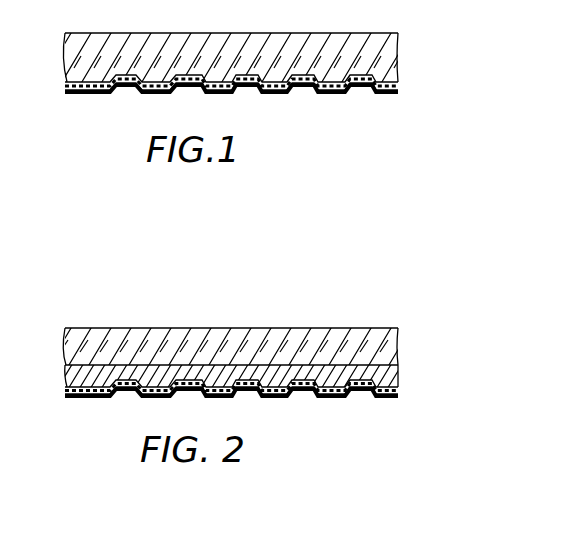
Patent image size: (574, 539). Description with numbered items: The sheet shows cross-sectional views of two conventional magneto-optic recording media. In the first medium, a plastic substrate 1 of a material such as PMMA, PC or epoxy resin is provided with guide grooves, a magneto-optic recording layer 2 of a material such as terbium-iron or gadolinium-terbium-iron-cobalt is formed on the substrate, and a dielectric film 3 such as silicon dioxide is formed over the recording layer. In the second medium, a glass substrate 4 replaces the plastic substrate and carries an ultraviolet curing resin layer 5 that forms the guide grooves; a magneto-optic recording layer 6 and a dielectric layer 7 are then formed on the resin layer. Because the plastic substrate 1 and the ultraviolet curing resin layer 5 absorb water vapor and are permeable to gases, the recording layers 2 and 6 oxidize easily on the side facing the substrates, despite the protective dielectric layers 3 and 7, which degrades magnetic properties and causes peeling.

In FIG. 1, the plastic substrate 1 is at (386, 57).
In FIG. 1, the magneto-optic recording layer 2 is at (400, 85).
In FIG. 1, the dielectric film 3 is at (399, 93).
In FIG. 2, the glass substrate 4 is at (388, 343).
In FIG. 2, the ultraviolet curing resin layer 5 is at (393, 372).
In FIG. 2, the magneto-optic recording layer 6 is at (399, 385).
In FIG. 2, the dielectric layer 7 is at (401, 397).